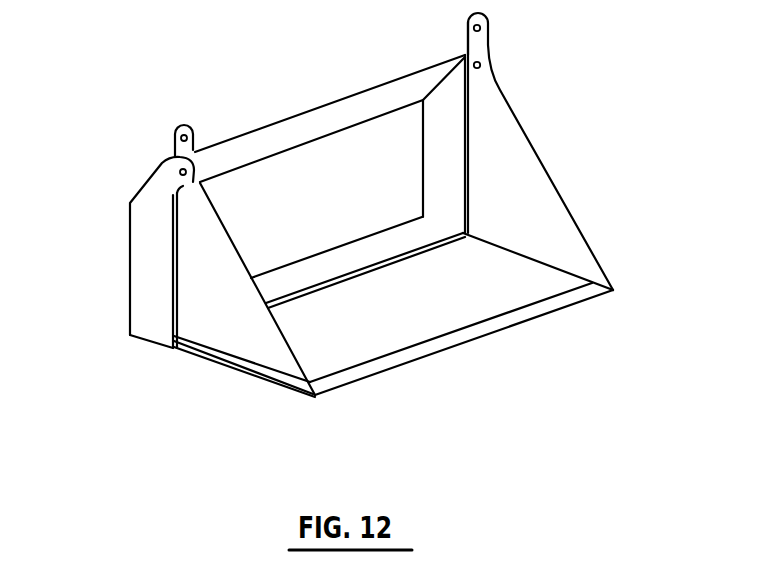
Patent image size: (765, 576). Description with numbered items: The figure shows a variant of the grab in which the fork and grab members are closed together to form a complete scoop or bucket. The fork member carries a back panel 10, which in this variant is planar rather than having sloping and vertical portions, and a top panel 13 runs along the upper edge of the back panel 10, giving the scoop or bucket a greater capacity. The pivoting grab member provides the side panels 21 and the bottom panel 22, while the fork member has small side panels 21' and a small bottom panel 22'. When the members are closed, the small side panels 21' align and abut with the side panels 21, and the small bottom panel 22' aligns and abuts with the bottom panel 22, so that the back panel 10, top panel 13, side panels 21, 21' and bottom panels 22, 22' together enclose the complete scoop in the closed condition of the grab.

The back panel 10 is at (331, 212).
The top panel 13 is at (257, 142).
The side panels 21 is at (405, 245).
The small side panels 21' is at (327, 241).
The bottom panel 22 is at (393, 378).
The small bottom panel 22' is at (365, 353).